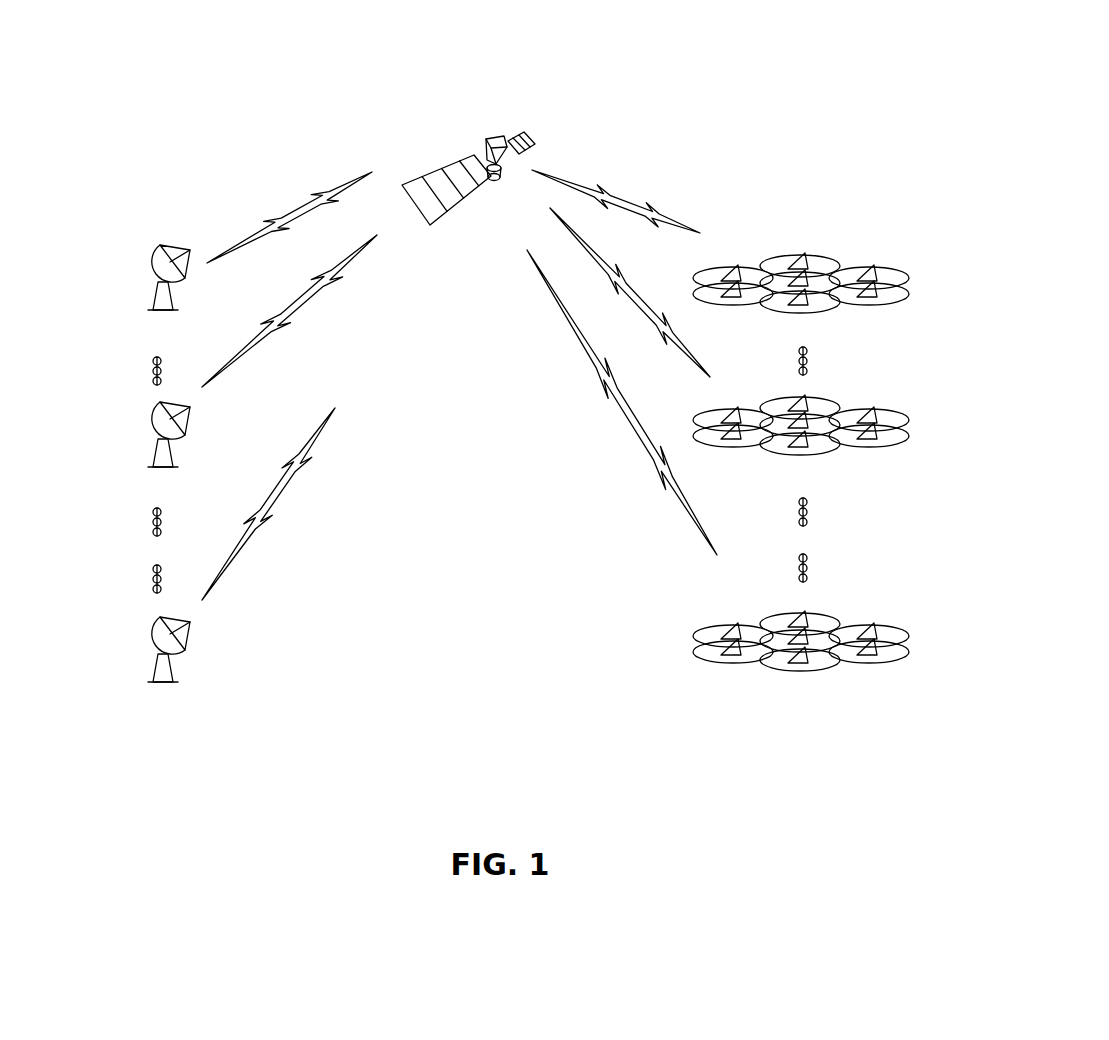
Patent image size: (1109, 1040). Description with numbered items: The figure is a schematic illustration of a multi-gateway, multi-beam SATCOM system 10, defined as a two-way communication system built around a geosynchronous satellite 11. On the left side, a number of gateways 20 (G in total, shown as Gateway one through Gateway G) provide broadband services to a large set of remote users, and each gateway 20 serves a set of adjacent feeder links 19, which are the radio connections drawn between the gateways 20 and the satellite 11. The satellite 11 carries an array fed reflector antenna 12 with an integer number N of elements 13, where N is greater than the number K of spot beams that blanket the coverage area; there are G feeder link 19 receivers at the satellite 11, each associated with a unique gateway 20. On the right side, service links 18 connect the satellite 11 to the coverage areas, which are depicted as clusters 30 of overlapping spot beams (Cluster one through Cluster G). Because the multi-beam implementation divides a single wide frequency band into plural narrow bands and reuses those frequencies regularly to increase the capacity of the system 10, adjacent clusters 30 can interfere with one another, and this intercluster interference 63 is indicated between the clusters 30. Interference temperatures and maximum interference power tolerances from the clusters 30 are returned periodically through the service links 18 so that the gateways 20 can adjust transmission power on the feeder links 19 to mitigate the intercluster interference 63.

The multi-beam SATCOM system 10 is at (719, 98).
The geosynchronous satellite 11 is at (488, 139).
The array fed reflector antenna 12 is at (519, 134).
The elements 13 is at (440, 178).
The service links 18 is at (600, 185).
The feeder links 19 is at (298, 205).
The gateways 20 is at (148, 258).
The clusters 30 is at (862, 252).
The intercluster interference 63 is at (808, 360).